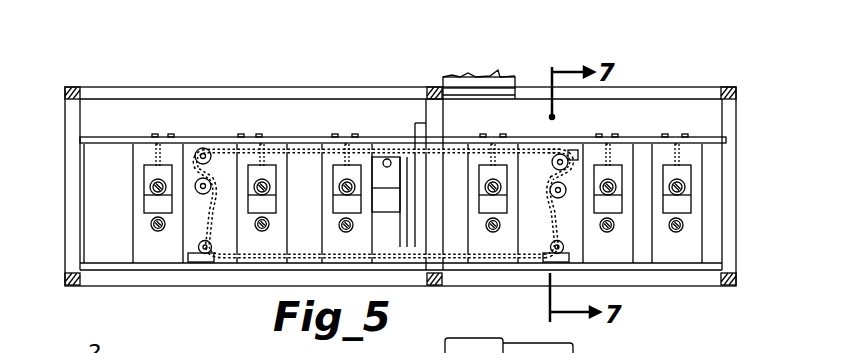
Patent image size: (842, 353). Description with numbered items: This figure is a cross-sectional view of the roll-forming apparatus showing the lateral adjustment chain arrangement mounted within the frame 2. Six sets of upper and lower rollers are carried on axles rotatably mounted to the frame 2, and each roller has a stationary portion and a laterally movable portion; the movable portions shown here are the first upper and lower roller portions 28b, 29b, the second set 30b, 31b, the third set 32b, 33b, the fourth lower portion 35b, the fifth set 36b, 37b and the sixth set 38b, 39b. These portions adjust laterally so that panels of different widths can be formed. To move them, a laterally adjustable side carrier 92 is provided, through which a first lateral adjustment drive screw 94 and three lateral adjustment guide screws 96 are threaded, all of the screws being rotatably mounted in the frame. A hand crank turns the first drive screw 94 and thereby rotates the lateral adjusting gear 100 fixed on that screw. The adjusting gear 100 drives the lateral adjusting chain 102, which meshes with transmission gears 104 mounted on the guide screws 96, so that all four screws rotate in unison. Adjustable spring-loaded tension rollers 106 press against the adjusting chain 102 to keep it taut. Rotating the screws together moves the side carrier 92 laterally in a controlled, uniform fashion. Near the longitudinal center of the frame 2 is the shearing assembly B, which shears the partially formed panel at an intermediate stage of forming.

The frame 2 is at (44, 102).
The side carrier 92 is at (140, 163).
The lateral adjusting chain 102 is at (260, 263).
The laterally movable portion of first upper roller 28b is at (151, 180).
The laterally movable portion of first lower roller 29b is at (150, 228).
The laterally movable portion of second upper roller 30b is at (273, 166).
The laterally movable portion of second lower roller 31b is at (262, 231).
The laterally movable portion of third upper roller 32b is at (336, 179).
The laterally movable portion of third lower roller 33b is at (348, 222).
The laterally movable portion of fourth lower roller 35b is at (491, 234).
The laterally movable portion of fifth upper roller 36b is at (612, 182).
The laterally movable portion of fifth lower roller 37b is at (610, 232).
The laterally movable portion of sixth upper roller 38b is at (683, 186).
The laterally movable portion of sixth lower roller 39b is at (488, 176).
The first lateral adjustment drive screw 94 is at (572, 160).
The lateral adjustment guide screws 96 is at (211, 163).
The lateral adjusting gear 100 is at (556, 155).
The transmission gears 104 is at (197, 150).
The tension rollers 106 is at (563, 190).
The shearing assembly B is at (398, 146).